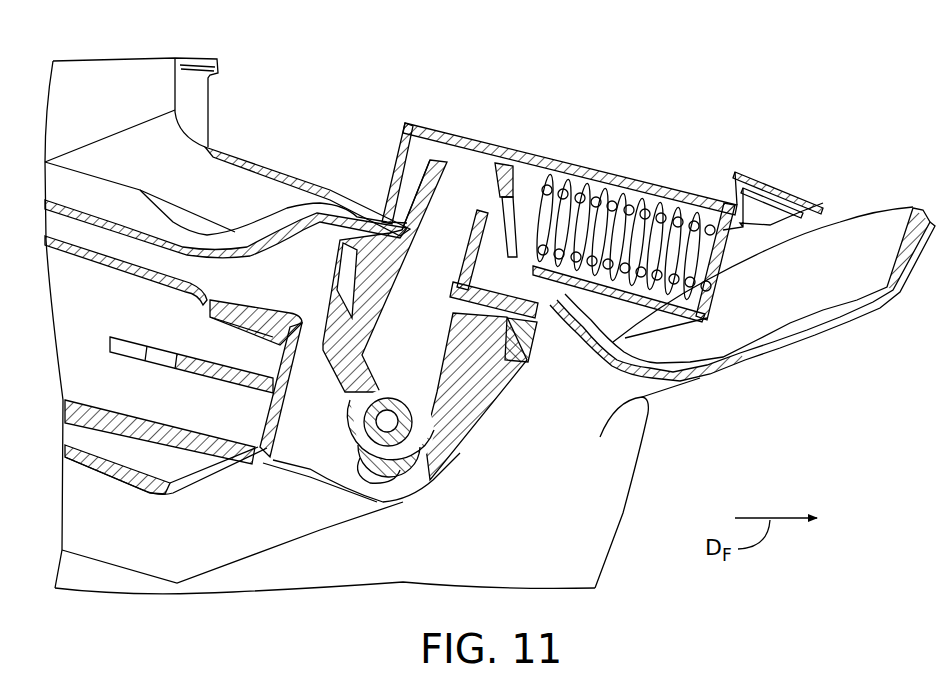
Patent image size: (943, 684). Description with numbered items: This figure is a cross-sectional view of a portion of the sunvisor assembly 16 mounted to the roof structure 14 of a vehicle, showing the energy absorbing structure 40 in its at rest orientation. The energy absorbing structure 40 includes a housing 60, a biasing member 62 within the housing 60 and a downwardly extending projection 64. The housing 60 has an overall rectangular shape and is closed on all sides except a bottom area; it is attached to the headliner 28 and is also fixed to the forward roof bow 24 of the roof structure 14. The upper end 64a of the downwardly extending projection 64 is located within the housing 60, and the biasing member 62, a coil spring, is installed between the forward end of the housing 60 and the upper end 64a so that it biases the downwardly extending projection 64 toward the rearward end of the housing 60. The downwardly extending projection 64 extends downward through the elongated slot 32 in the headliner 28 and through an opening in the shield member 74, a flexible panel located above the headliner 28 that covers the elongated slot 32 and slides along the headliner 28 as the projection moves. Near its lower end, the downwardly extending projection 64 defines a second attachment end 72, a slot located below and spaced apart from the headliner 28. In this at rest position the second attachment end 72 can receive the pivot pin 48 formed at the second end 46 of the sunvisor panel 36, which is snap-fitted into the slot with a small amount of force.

The roof structure 14 is at (125, 75).
The sunvisor assembly 16 is at (97, 480).
The forward roof bow 24 is at (740, 180).
The headliner 28 is at (95, 213).
The elongated slot 32 is at (550, 294).
The sunvisor panel 36 is at (150, 430).
The energy absorbing structure 40 is at (539, 148).
The second end 46 is at (297, 477).
The pivot pin 48 is at (368, 407).
The housing 60 is at (600, 172).
The biasing member 62 is at (635, 190).
The downwardly extending projection 64 is at (478, 400).
The upper end 64a is at (445, 198).
The second attachment end 72 is at (437, 432).
The shield member 74 is at (301, 173).